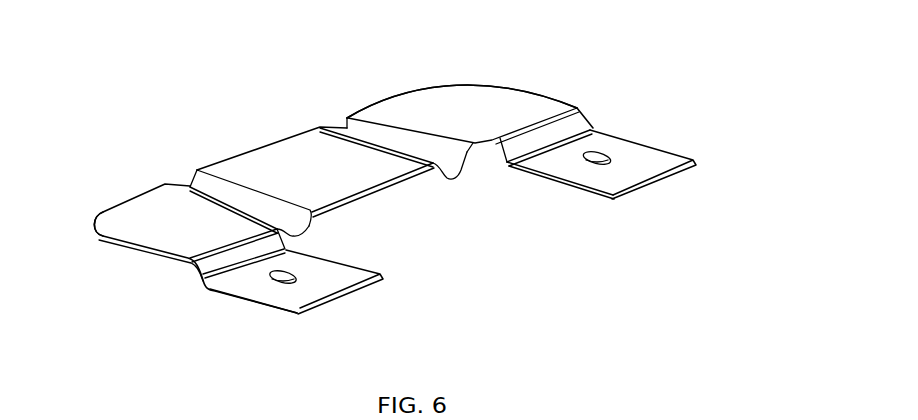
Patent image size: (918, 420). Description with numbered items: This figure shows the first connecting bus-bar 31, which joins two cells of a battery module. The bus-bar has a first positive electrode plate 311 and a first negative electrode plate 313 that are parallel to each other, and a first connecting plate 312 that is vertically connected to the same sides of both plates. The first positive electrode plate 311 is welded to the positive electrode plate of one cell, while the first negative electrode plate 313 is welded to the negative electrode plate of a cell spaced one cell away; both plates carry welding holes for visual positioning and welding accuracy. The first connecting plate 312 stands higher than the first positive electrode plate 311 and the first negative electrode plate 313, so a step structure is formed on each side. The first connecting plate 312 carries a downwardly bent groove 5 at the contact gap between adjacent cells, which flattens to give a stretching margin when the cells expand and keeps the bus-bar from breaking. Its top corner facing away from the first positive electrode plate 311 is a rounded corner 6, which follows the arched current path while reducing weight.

The first connecting bus-bar 31 is at (78, 89).
The first positive electrode plate 311 is at (332, 283).
The first connecting plate 312 is at (313, 153).
The first negative electrode plate 313 is at (635, 160).
The groove 5 is at (208, 183).
The rounded corner 6 is at (458, 80).